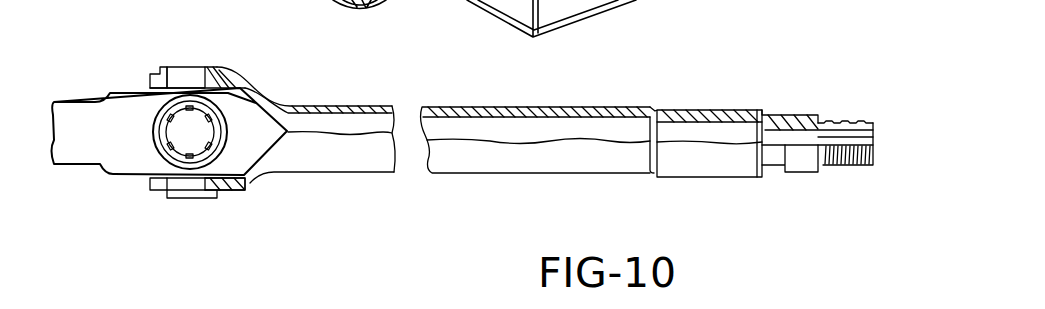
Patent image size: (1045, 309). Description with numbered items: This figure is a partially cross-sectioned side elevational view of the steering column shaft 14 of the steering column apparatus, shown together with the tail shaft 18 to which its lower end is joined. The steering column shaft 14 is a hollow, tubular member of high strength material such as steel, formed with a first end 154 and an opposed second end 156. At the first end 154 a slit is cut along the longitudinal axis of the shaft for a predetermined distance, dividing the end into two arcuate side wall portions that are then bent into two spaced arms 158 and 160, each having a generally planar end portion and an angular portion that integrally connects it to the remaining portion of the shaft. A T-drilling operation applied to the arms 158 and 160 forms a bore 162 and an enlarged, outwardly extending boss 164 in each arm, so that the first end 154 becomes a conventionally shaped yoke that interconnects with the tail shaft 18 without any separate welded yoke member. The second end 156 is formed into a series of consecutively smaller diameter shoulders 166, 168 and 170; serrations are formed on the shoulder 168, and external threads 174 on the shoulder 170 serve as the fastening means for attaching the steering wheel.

The steering column shaft 14 is at (497, 173).
The tail shaft 18 is at (77, 104).
The first end 154 is at (150, 80).
The second end 156 is at (875, 124).
The arm 158 is at (285, 97).
The arm 160 is at (247, 184).
The bore 162 is at (199, 72).
The boss 164 is at (222, 72).
The shoulder 166 is at (688, 105).
The shoulder 168 is at (786, 113).
The shoulder 170 is at (837, 119).
The external threads 174 is at (851, 166).